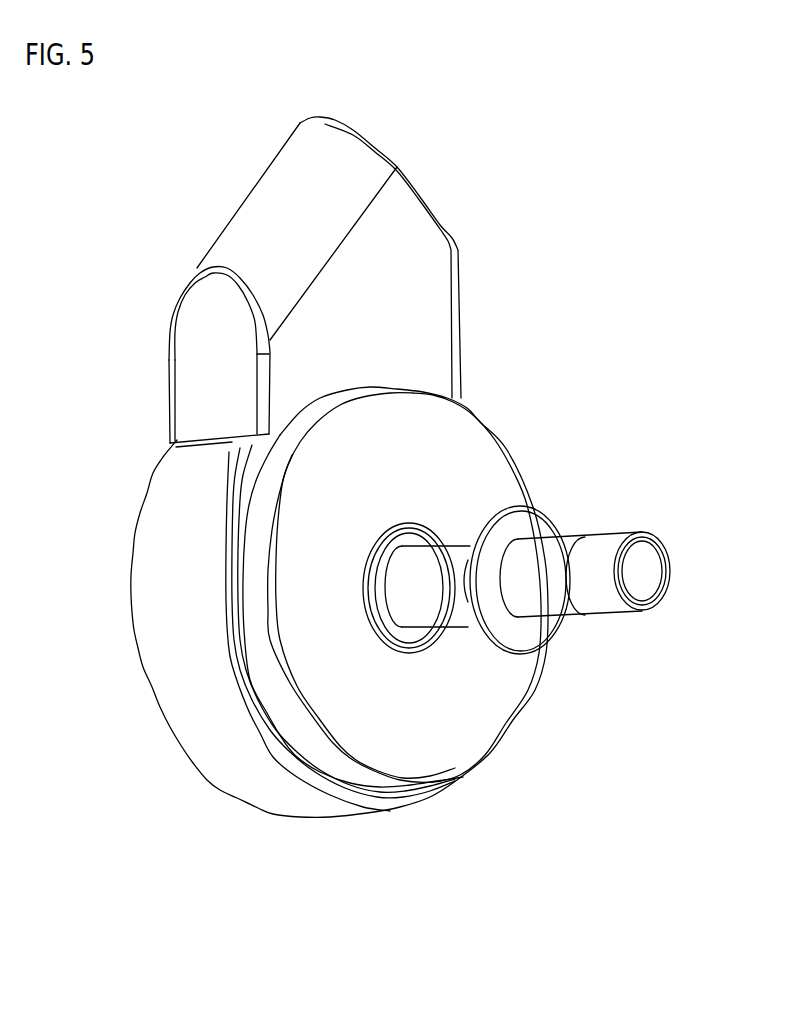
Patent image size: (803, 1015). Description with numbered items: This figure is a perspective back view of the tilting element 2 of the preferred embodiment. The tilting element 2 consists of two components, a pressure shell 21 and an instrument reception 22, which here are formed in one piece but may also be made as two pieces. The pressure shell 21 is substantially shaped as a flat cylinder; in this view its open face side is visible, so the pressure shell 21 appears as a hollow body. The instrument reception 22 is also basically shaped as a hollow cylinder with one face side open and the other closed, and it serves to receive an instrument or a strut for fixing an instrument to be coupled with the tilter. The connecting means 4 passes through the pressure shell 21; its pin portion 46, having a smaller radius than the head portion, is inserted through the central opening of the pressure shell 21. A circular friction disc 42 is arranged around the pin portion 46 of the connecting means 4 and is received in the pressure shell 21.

The tilting element 2 is at (147, 493).
The pressure shell 21 is at (221, 748).
The instrument reception 22 is at (397, 250).
The friction disc 42 is at (472, 483).
The pin portion 46 is at (595, 598).
The connecting means 4 is at (660, 603).